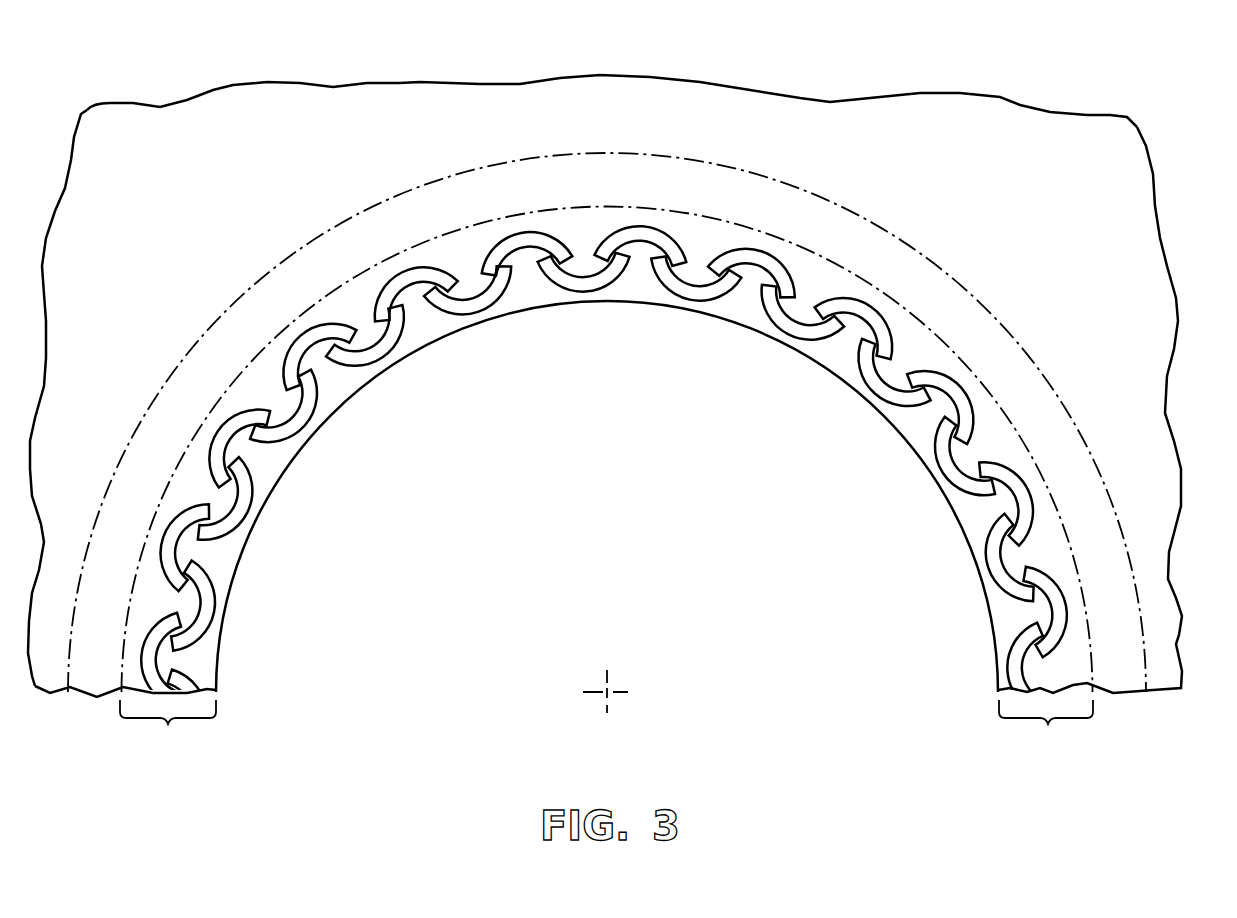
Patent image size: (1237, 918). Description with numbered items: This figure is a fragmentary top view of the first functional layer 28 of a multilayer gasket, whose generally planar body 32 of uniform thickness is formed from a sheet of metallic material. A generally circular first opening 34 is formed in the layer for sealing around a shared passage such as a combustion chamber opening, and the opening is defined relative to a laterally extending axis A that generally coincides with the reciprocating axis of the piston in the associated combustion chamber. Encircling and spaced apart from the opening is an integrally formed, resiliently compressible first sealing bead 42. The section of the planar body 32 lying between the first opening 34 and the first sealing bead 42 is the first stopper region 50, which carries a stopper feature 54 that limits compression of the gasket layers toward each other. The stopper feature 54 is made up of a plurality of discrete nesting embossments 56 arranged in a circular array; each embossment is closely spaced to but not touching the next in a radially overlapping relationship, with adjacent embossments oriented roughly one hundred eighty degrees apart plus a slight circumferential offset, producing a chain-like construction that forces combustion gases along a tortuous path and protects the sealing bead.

The first functional layer 28 is at (1003, 95).
The planar body 32 is at (909, 128).
The first opening 34 is at (330, 413).
The first sealing bead 42 is at (1105, 556).
The first stopper region 50 is at (606, 728).
The stopper feature 54 is at (582, 444).
The discrete nesting embossments 56 is at (756, 250).
The axis A is at (612, 688).